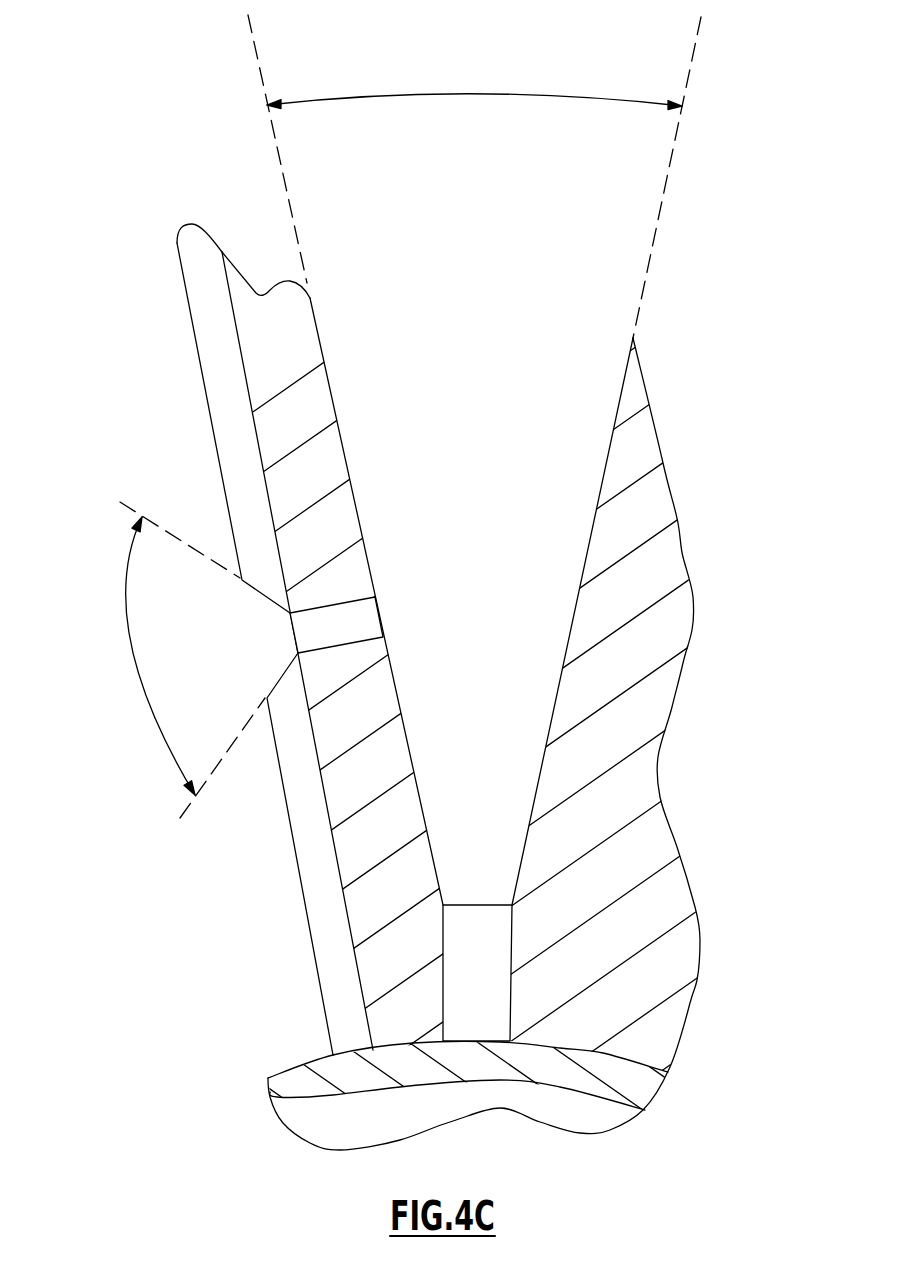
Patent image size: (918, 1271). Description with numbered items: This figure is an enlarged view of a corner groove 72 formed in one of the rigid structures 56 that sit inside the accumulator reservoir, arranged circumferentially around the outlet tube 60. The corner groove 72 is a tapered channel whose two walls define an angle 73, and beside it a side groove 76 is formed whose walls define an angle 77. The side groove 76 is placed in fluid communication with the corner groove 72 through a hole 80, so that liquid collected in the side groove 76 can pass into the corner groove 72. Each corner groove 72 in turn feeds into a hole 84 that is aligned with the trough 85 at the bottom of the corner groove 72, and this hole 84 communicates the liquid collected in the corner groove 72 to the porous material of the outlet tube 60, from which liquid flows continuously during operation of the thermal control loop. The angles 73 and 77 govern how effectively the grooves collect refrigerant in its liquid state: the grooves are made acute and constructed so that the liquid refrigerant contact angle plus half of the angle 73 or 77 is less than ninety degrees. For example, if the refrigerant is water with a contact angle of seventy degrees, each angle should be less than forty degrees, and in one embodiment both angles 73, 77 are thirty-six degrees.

The rigid structure 56 is at (247, 317).
The outlet tube 60 is at (290, 1085).
The corner groove 72 is at (444, 338).
The angle 73 is at (462, 93).
The side groove 76 is at (251, 448).
The angle 77 is at (152, 716).
The hole 80 is at (352, 640).
The hole 84 is at (493, 985).
The trough 85 is at (477, 868).